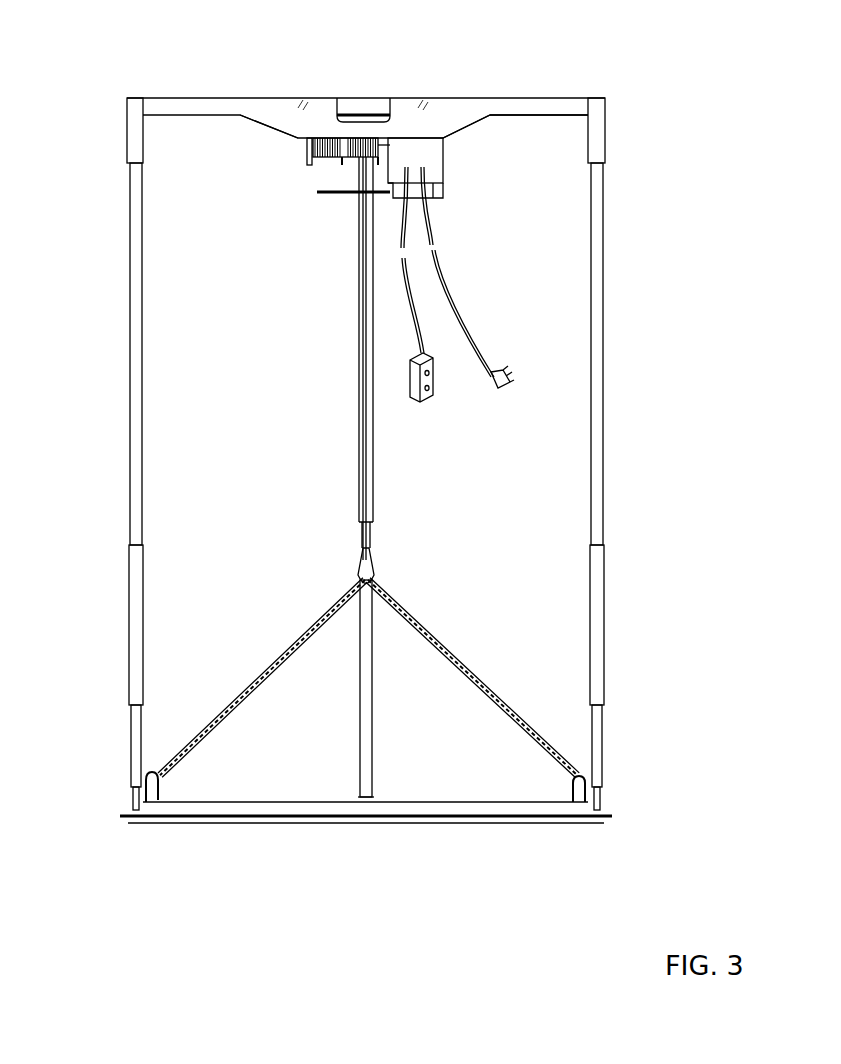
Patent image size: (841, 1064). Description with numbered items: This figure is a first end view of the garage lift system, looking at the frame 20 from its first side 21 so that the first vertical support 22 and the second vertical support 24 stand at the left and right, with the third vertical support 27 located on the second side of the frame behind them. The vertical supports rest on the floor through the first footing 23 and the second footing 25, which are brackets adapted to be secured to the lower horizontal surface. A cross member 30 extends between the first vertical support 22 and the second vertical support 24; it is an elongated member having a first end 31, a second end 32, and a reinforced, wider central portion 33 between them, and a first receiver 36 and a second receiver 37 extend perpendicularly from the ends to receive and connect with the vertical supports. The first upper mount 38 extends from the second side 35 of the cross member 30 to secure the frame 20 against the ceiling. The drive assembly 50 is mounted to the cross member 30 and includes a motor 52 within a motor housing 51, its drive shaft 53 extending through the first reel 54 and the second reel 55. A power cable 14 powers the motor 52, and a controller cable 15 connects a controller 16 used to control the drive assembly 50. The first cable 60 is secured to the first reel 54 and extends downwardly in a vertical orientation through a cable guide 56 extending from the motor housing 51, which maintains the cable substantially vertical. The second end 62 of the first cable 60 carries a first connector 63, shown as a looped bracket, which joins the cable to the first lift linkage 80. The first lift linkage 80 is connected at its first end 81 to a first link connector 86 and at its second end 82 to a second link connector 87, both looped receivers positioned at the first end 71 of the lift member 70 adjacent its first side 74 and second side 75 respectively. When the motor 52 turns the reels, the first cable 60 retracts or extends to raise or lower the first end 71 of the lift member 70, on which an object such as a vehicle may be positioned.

The power cable 14 is at (477, 337).
The controller cable 15 is at (420, 315).
The controller 16 is at (425, 402).
The frame 20 is at (443, 96).
The first side 21 is at (478, 105).
The first vertical support 22 is at (128, 388).
The first footing 23 is at (130, 820).
The second vertical support 24 is at (604, 358).
The second footing 25 is at (608, 820).
The third vertical support 27 is at (373, 490).
The cross member 30 is at (223, 98).
The first end 31 is at (147, 98).
The second end 32 is at (592, 98).
The central portion 33 is at (310, 105).
The second side 35 is at (520, 107).
The first receiver 36 is at (127, 135).
The second receiver 37 is at (606, 125).
The first upper mount 38 is at (362, 107).
The drive assembly 50 is at (462, 185).
The motor housing 51 is at (432, 215).
The motor 52 is at (385, 172).
The drive shaft 53 is at (443, 148).
The first reel 54 is at (347, 170).
The second reel 55 is at (318, 163).
The cable guide 56 is at (328, 192).
The first cable 60 is at (370, 445).
The second end 62 is at (368, 533).
The first connector 63 is at (357, 550).
The lift member 70 is at (305, 823).
The first end 71 is at (408, 810).
The first side 74 is at (135, 812).
The second side 75 is at (595, 810).
The first lift linkage 80 is at (455, 660).
The first end 81 is at (158, 765).
The second end 82 is at (572, 765).
The first link connector 86 is at (172, 788).
The second link connector 87 is at (572, 790).